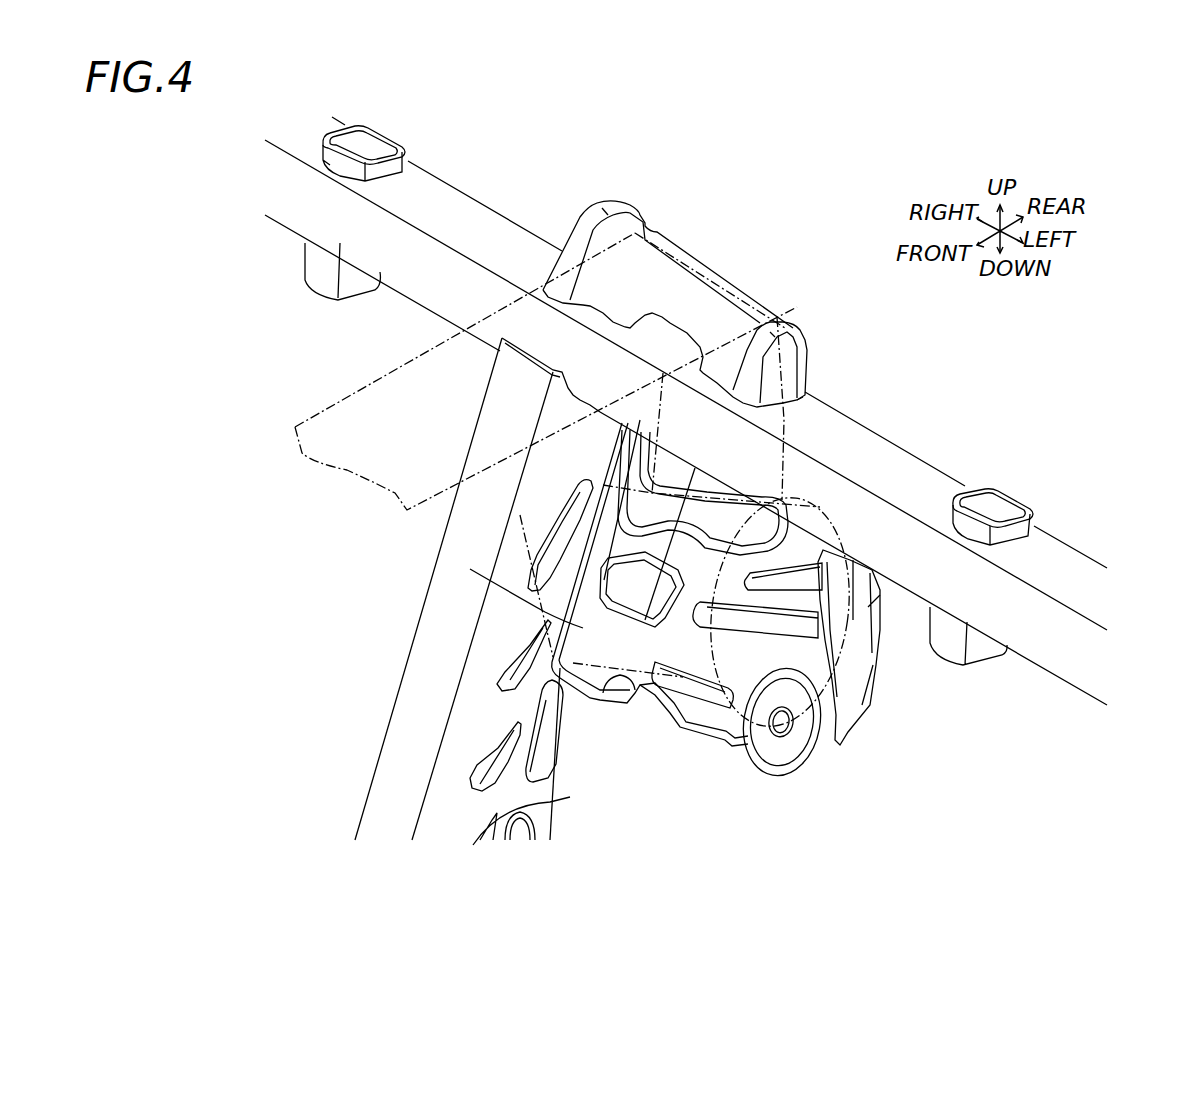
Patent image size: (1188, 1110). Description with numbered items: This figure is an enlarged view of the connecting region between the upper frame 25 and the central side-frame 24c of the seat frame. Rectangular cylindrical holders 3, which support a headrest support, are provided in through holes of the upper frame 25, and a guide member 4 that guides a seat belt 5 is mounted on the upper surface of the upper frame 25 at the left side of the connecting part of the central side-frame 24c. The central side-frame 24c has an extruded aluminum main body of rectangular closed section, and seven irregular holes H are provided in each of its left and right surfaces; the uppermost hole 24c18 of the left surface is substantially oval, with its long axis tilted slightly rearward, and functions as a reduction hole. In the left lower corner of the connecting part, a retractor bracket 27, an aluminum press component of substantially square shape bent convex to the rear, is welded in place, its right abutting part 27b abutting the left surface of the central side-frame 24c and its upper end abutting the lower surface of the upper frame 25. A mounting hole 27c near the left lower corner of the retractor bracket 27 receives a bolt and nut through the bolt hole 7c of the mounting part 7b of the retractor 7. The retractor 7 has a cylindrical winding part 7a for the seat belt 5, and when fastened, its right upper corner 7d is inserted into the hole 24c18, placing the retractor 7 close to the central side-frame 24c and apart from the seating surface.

The rectangular cylindrical holder 3 is at (387, 133).
The guide member 4 is at (627, 208).
The seat belt 5 is at (343, 402).
The retractor 7 is at (637, 663).
The winding part 7a is at (677, 683).
The mounting part 7b is at (777, 750).
The bolt hole 7c is at (767, 725).
The right upper corner 7d is at (557, 527).
The central side-frame 24c is at (397, 697).
The hole 24c18 is at (537, 556).
The upper frame 25 is at (907, 450).
The retractor bracket 27 is at (870, 707).
The right abutting part 27b is at (587, 592).
The mounting hole 27c is at (790, 732).
The irregular hole H is at (500, 668).